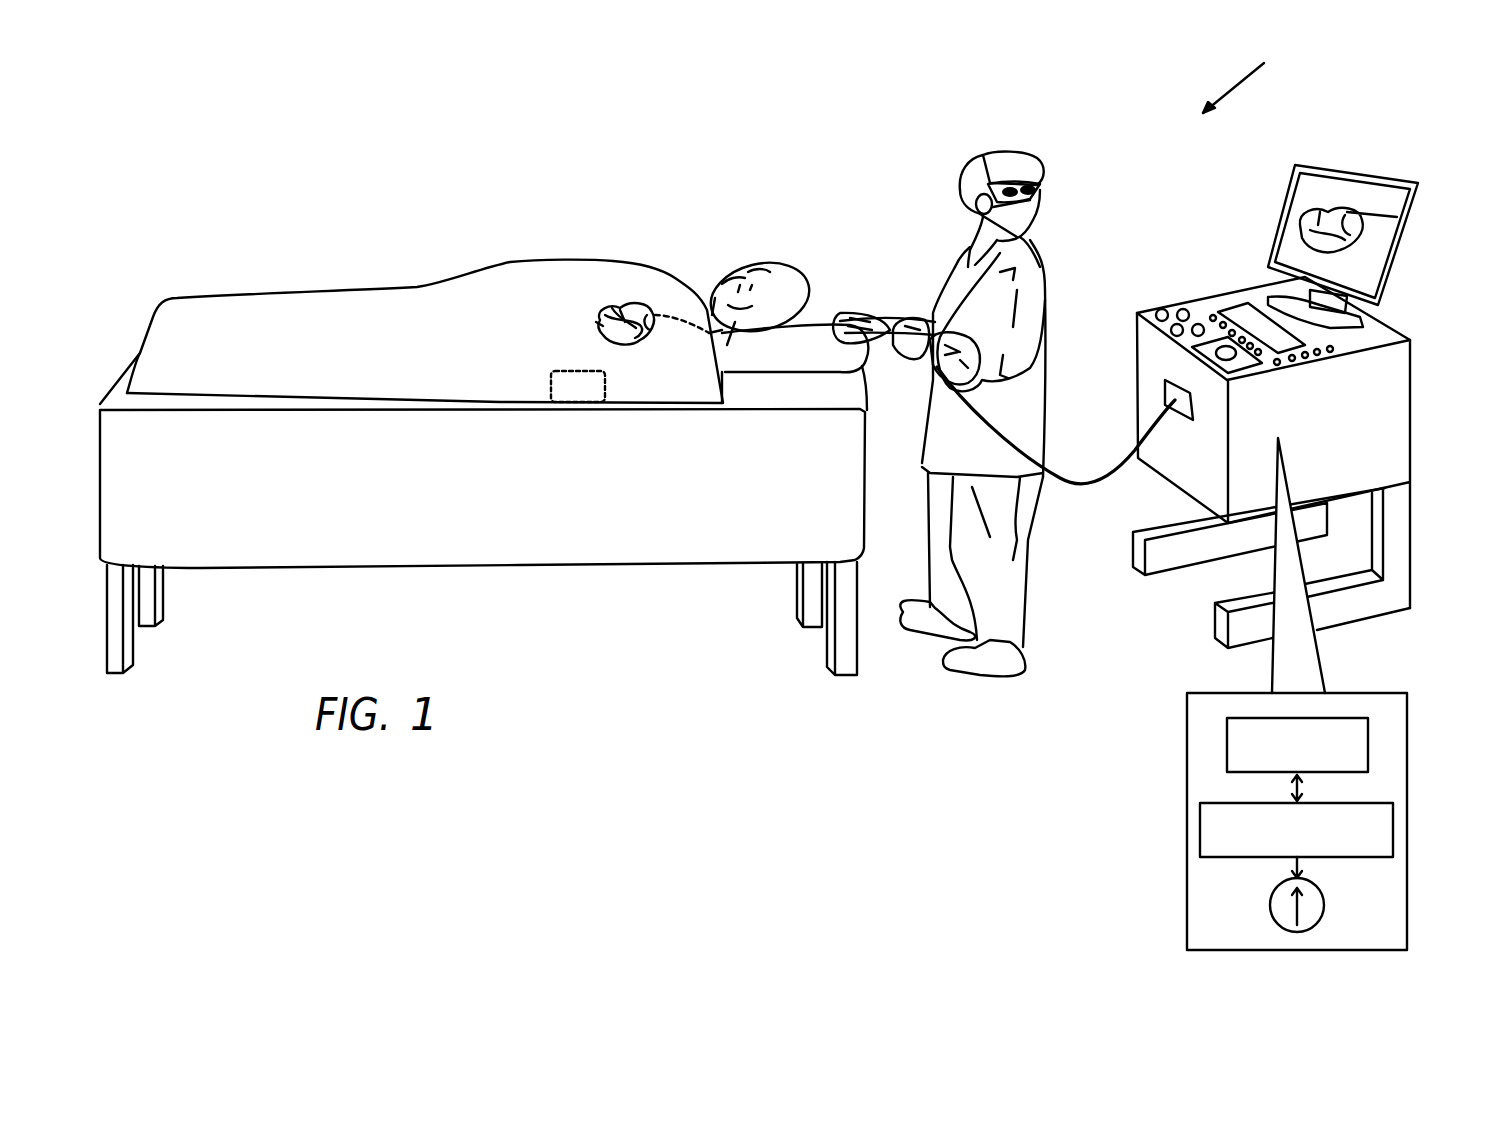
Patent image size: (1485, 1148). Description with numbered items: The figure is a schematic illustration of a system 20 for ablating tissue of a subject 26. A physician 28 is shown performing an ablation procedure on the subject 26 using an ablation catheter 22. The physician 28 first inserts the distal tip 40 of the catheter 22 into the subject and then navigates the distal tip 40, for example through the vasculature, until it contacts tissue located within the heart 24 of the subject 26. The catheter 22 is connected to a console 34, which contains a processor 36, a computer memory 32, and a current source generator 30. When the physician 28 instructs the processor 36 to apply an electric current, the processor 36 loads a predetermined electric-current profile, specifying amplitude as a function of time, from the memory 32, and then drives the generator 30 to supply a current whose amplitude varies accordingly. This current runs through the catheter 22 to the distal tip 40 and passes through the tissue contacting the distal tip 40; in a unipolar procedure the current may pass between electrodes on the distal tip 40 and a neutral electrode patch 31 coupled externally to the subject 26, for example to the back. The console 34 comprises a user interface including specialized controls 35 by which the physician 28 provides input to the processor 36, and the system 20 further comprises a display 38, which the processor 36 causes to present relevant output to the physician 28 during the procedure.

The system 20 is at (1251, 81).
The ablation catheter 22 is at (1080, 473).
The heart 24 is at (633, 307).
The subject 26 is at (790, 260).
The physician 28 is at (1025, 150).
The current source generator 30 is at (1270, 905).
The neutral electrode patch 31 is at (583, 370).
The computer memory 32 is at (1225, 748).
The console 34 is at (1237, 290).
The specialized controls 35 is at (1150, 313).
The processor 36 is at (1200, 833).
The display 38 is at (1402, 238).
The distal tip 40 is at (612, 307).